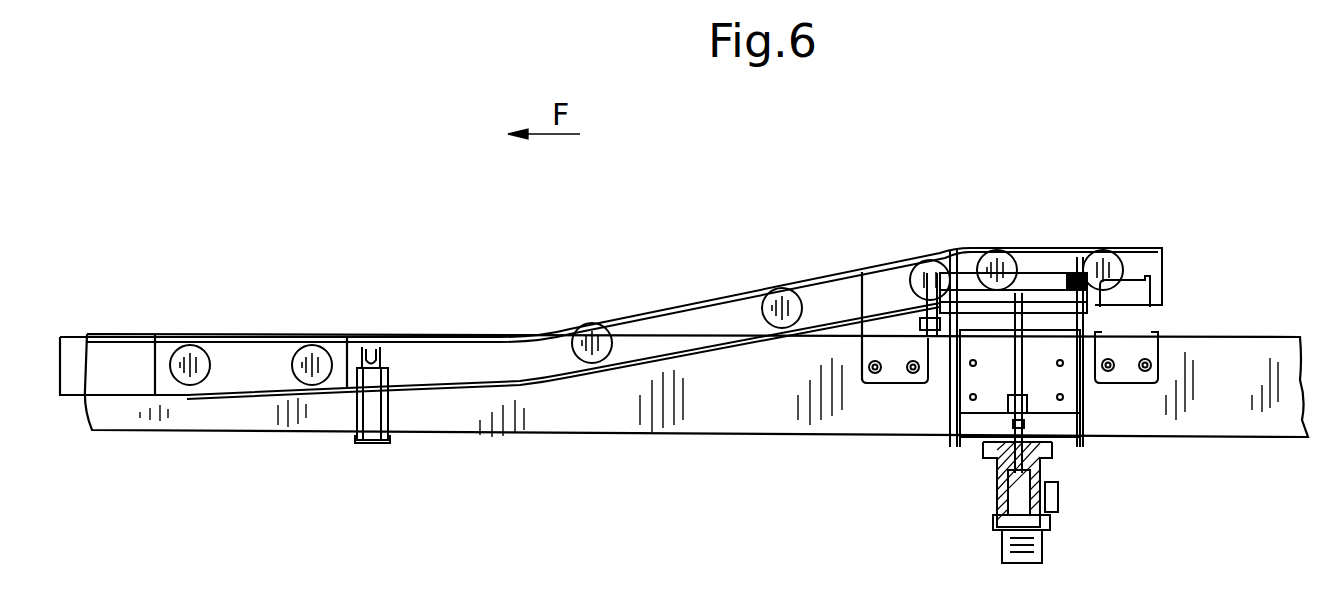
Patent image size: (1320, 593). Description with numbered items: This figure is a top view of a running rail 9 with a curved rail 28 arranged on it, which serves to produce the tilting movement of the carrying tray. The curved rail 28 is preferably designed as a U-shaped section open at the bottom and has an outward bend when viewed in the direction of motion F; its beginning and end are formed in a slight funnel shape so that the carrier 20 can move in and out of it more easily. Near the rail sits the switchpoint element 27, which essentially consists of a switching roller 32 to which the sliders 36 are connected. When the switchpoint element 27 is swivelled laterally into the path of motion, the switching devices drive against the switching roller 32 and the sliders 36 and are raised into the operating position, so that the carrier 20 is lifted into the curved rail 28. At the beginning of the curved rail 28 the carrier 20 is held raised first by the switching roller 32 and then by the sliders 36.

The running rail 9 is at (273, 417).
The carrier 20 is at (310, 340).
The curved rail 28 is at (642, 312).
The slider 36 is at (1028, 280).
The switching roller 32 is at (1063, 283).
The switchpoint element 27 is at (1117, 540).